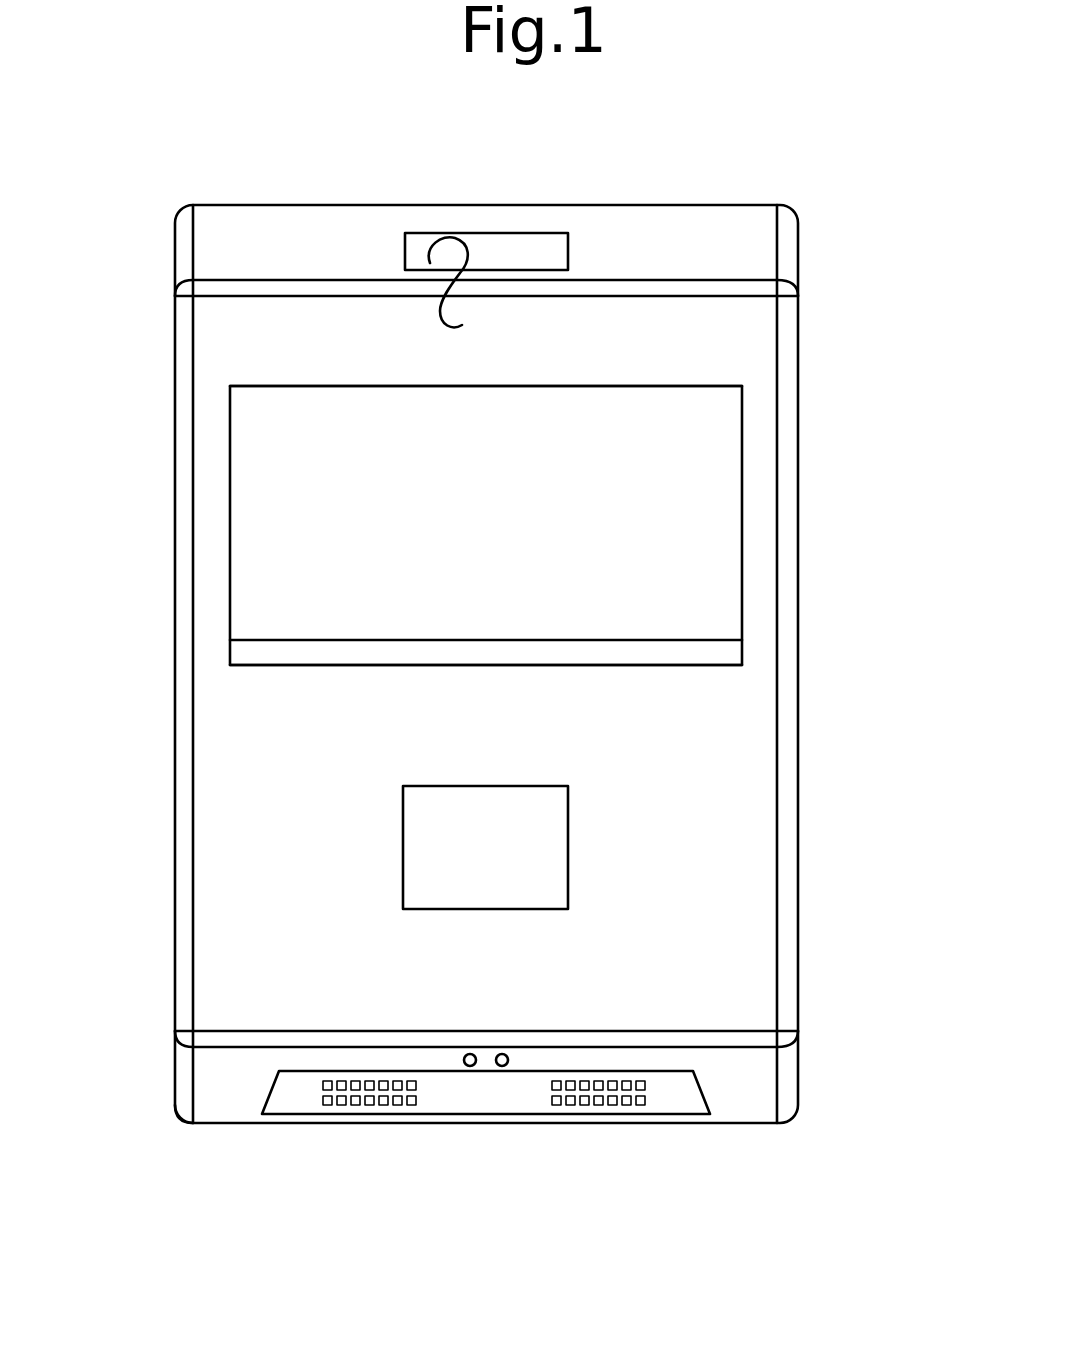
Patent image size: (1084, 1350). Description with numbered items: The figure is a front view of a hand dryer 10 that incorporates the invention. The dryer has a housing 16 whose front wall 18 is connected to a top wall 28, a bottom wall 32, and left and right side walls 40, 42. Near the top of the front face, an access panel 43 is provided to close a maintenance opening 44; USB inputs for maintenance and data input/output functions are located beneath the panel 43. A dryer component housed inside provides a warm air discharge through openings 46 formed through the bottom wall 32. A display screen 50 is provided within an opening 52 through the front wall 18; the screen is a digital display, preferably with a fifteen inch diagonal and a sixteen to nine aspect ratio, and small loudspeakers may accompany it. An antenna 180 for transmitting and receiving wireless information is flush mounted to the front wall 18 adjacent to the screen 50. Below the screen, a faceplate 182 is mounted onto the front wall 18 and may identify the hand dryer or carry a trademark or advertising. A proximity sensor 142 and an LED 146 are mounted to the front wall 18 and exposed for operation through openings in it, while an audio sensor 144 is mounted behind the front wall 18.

The hand dryer 10 is at (826, 524).
The housing 16 is at (797, 387).
The front wall 18 is at (740, 782).
The top wall 28 is at (682, 253).
The bottom wall 32 is at (658, 1106).
The left side wall 40 is at (187, 600).
The right side wall 42 is at (797, 627).
The access panel 43 is at (525, 252).
The maintenance opening 44 is at (468, 290).
The openings 46 is at (484, 1157).
The display screen 50 is at (486, 525).
The opening 52 is at (263, 470).
The proximity sensor 142 is at (465, 1057).
The audio sensor 144 is at (193, 1122).
The LED 146 is at (507, 1058).
The antenna 180 is at (250, 655).
The faceplate 182 is at (440, 858).